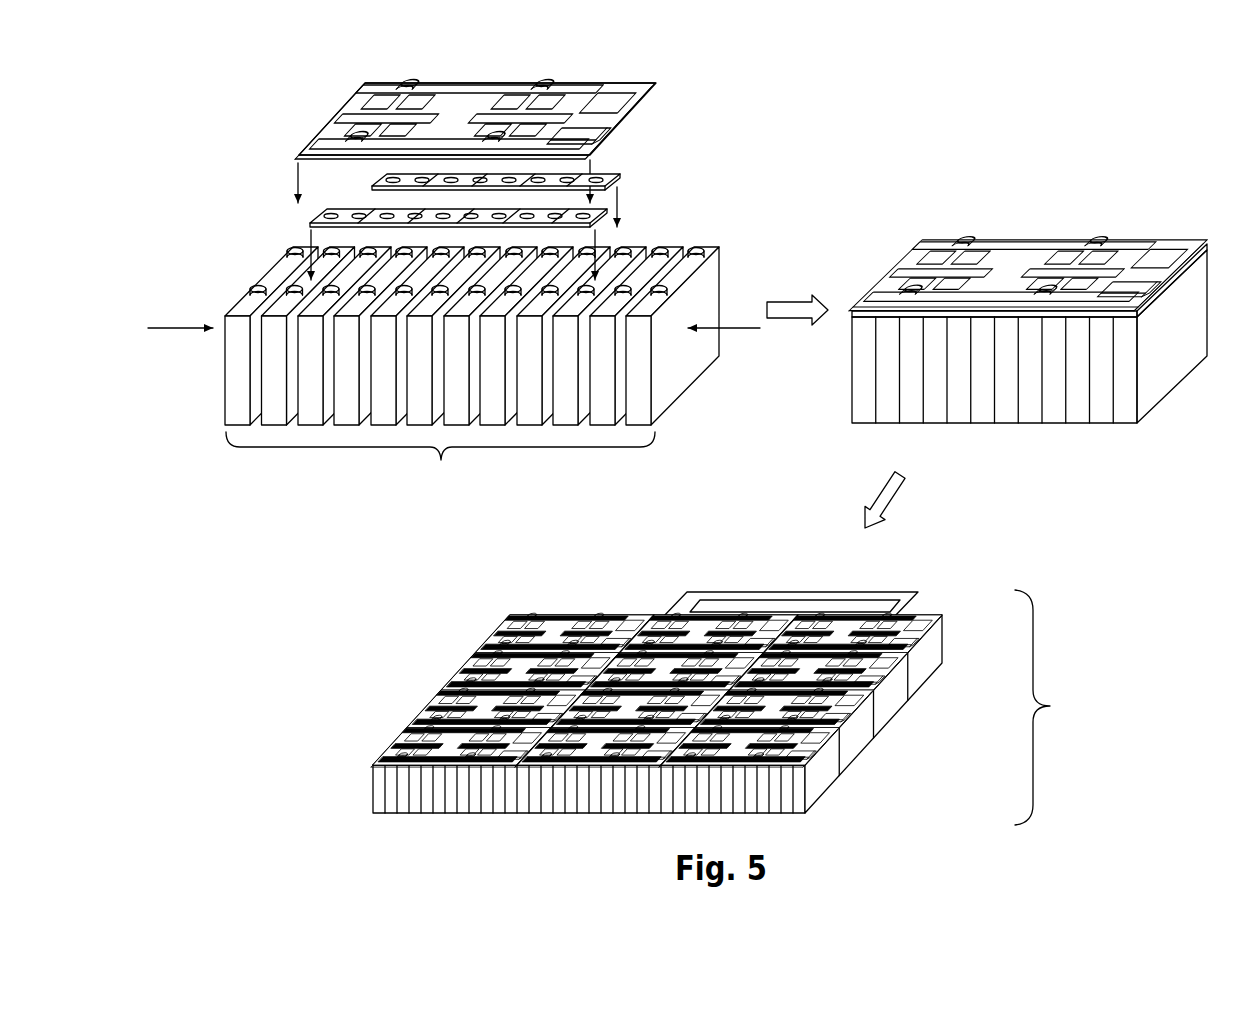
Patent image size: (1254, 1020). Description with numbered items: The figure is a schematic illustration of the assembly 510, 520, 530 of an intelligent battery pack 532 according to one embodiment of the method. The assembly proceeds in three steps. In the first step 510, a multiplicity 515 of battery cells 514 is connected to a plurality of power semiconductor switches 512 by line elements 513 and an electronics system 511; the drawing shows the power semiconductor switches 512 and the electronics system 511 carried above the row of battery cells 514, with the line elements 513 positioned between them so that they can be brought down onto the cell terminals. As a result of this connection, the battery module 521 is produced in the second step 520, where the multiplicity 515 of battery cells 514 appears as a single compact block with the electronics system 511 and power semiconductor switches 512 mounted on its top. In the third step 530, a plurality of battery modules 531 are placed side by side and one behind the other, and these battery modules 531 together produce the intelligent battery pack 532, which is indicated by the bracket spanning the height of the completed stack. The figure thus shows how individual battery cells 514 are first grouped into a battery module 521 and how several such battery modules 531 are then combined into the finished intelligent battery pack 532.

The first step of the assembly 510 is at (208, 125).
The electronics system 511 is at (632, 118).
The power semiconductor switches 512 is at (353, 108).
The line elements 513 is at (627, 183).
The battery cells 514 is at (235, 408).
The multiplicity of battery cells 515 is at (440, 470).
The second step of the assembly 520 is at (905, 160).
The battery module 521 is at (1037, 242).
The third step of the assembly 530 is at (422, 653).
The battery modules 531 is at (822, 785).
The intelligent battery pack 532 is at (1061, 707).